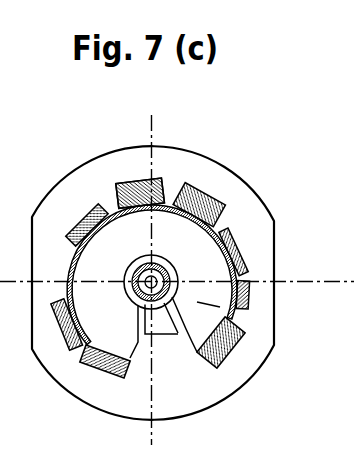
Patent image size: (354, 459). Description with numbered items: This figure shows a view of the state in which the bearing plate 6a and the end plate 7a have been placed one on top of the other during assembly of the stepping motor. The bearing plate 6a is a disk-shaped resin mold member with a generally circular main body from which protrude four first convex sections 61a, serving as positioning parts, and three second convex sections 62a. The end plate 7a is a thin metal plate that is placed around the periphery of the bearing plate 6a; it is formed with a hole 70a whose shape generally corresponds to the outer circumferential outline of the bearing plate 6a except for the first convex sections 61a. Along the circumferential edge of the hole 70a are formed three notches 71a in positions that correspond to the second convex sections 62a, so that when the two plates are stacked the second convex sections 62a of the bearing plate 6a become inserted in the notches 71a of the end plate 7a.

The end plate 7a is at (195, 181).
The hole 70a is at (240, 243).
The notches 71a is at (137, 188).
The second convex sections 62a is at (118, 188).
The bearing plate 6a is at (230, 313).
The first convex sections 61a is at (168, 370).